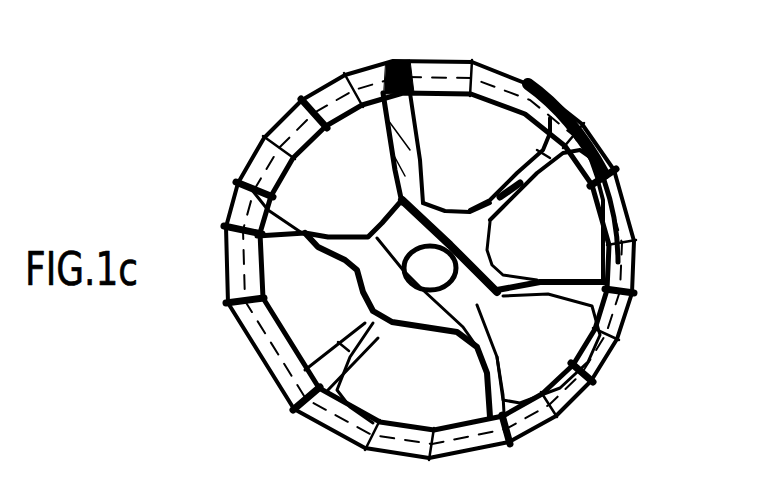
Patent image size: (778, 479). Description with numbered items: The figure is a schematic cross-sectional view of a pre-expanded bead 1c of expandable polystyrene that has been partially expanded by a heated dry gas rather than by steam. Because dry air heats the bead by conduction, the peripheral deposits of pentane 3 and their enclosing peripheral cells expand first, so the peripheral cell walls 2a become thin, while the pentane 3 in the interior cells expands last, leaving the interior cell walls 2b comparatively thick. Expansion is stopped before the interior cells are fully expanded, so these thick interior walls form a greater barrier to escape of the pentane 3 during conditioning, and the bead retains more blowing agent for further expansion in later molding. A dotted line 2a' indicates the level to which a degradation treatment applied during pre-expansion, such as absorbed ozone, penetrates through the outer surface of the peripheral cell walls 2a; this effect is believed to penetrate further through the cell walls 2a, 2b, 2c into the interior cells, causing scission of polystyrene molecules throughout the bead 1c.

The pre-expanded bead 1c is at (237, 92).
The peripheral cell walls 2a is at (566, 115).
The dotted line 2a' is at (639, 200).
The interior cell walls 2b is at (471, 297).
The cell walls 2c is at (487, 383).
The pentane 3 is at (322, 112).